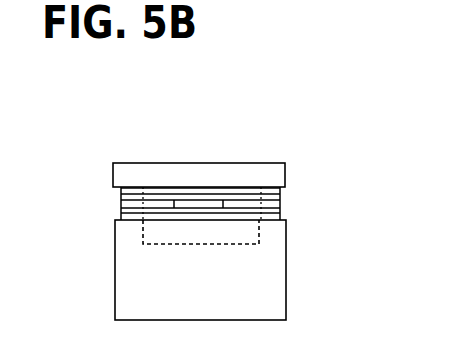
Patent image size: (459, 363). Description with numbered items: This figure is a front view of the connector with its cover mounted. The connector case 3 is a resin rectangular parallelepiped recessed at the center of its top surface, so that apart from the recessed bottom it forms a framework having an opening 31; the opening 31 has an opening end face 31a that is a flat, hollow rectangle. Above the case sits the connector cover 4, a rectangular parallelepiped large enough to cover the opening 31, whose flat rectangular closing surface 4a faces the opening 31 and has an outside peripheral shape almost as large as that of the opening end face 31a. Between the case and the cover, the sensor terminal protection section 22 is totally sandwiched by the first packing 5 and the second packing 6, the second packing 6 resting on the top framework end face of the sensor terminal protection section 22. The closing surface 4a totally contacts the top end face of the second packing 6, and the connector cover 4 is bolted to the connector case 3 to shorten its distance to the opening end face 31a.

The connector case 3 is at (115, 295).
The connector cover 4 is at (196, 163).
The closing surface 4a is at (283, 197).
The first packing 5 is at (121, 213).
The second packing 6 is at (121, 194).
The sensor terminal protection section 22 is at (281, 200).
The opening 31 is at (272, 231).
The opening end face 31a is at (275, 218).